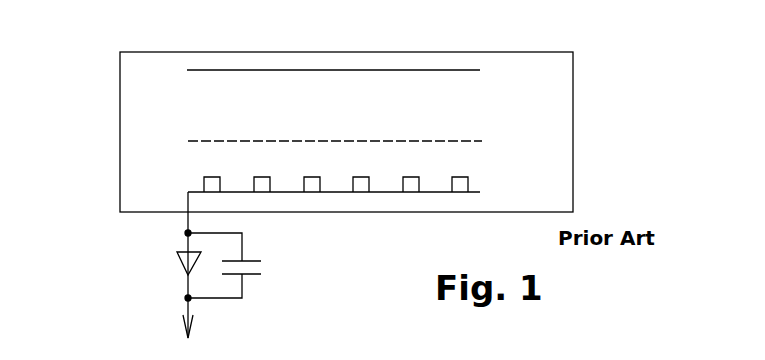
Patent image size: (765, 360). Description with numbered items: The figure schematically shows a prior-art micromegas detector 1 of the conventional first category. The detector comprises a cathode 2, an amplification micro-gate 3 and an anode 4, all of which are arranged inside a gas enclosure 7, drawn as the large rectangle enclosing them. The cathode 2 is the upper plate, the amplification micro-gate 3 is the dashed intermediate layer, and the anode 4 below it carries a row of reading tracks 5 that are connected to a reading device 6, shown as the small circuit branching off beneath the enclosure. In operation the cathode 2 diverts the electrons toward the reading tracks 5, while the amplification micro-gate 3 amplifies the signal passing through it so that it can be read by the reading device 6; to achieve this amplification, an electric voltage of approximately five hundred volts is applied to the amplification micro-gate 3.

The micromegas detector 1 is at (87, 112).
The cathode 2 is at (433, 70).
The amplification micro-gate 3 is at (455, 140).
The anode 4 is at (549, 177).
The reading tracks 5 is at (459, 186).
The reading device 6 is at (257, 288).
The gas enclosure 7 is at (573, 88).